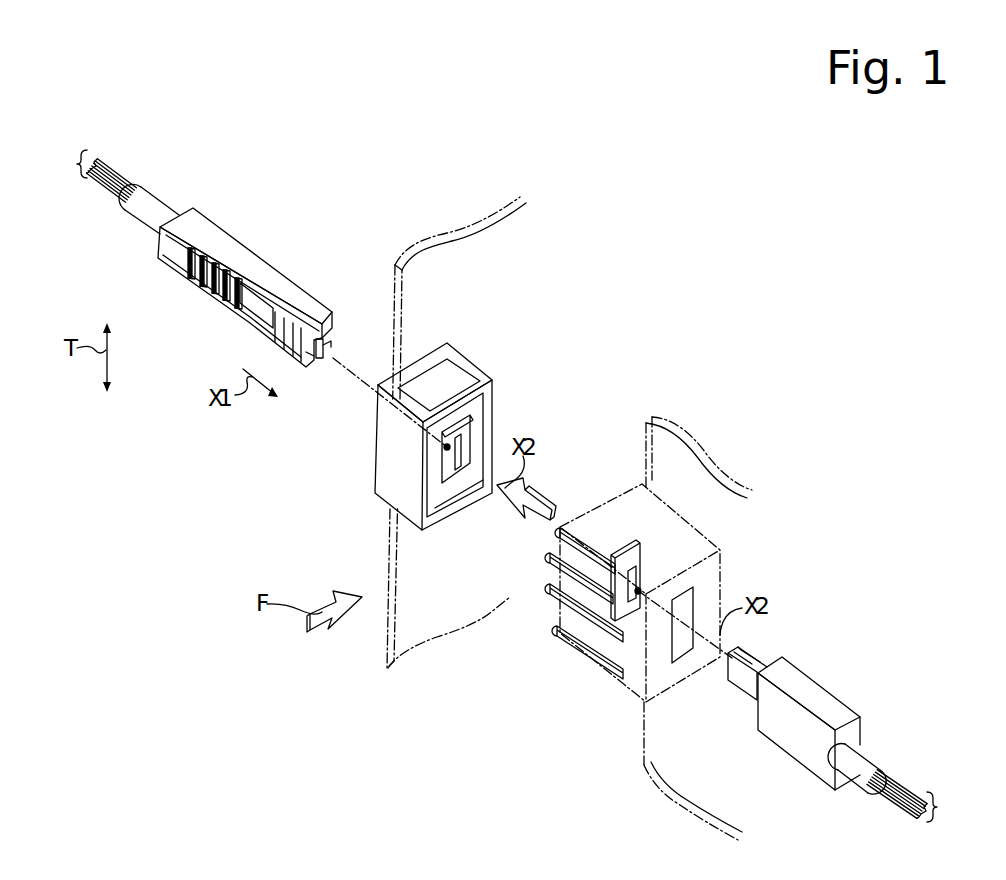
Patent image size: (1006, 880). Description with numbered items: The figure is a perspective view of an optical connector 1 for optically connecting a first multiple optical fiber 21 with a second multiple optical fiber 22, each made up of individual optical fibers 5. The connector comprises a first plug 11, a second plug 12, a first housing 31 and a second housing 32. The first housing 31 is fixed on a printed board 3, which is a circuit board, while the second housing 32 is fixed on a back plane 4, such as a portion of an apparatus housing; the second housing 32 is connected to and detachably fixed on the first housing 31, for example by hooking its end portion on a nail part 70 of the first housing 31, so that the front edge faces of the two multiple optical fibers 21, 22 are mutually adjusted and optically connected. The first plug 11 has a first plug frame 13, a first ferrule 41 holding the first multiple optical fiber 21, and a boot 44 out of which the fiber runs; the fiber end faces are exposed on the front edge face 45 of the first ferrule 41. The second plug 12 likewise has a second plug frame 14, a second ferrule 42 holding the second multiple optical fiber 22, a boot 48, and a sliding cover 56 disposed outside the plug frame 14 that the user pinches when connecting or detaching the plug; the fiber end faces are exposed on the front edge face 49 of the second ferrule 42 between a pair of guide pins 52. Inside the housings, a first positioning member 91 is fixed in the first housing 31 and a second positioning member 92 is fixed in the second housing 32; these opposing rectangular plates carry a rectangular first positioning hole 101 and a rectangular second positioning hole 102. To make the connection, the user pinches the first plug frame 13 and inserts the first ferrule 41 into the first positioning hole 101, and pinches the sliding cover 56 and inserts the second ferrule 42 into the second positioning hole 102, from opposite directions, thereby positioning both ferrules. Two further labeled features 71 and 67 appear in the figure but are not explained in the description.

The optical connector 1 is at (719, 199).
The printed board 3 is at (680, 454).
The back plane 4 is at (464, 248).
The optical fibers 5 is at (507, 486).
The first plug 11 is at (812, 693).
The second plug 12 is at (239, 298).
The first plug frame 13 is at (788, 745).
The second plug frame 14 is at (255, 316).
The first multiple optical fiber 21 is at (906, 793).
The second multiple optical fiber 22 is at (108, 188).
The first housing 31 is at (618, 586).
The second housing 32 is at (372, 423).
The first ferrule 41 is at (752, 664).
The second ferrule 42 is at (310, 364).
The boot 44 is at (860, 758).
The front edge face 45 is at (743, 681).
The boot 48 is at (153, 210).
The front edge face 49 is at (326, 374).
The guide pins 52 is at (336, 360).
The sliding cover 56 is at (242, 262).
The engaging portion 67 is at (743, 658).
The nail part 70 is at (585, 524).
The mounting wall 71 is at (427, 341).
The first positioning member 91 is at (556, 586).
The second positioning member 92 is at (442, 470).
The first positioning hole 101 is at (643, 572).
The second positioning hole 102 is at (467, 505).